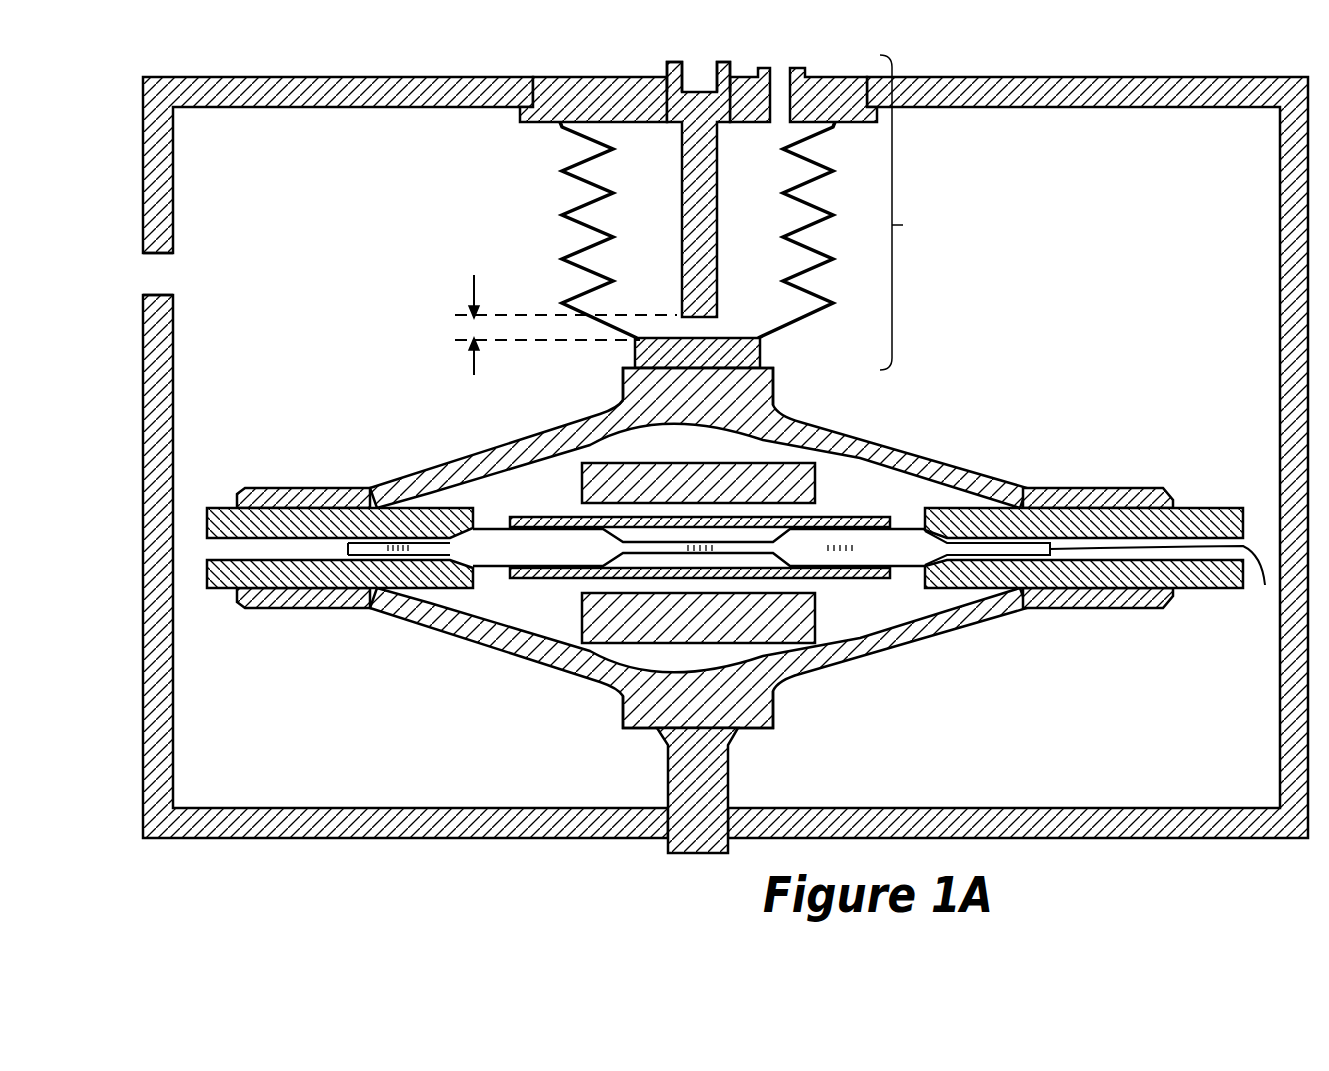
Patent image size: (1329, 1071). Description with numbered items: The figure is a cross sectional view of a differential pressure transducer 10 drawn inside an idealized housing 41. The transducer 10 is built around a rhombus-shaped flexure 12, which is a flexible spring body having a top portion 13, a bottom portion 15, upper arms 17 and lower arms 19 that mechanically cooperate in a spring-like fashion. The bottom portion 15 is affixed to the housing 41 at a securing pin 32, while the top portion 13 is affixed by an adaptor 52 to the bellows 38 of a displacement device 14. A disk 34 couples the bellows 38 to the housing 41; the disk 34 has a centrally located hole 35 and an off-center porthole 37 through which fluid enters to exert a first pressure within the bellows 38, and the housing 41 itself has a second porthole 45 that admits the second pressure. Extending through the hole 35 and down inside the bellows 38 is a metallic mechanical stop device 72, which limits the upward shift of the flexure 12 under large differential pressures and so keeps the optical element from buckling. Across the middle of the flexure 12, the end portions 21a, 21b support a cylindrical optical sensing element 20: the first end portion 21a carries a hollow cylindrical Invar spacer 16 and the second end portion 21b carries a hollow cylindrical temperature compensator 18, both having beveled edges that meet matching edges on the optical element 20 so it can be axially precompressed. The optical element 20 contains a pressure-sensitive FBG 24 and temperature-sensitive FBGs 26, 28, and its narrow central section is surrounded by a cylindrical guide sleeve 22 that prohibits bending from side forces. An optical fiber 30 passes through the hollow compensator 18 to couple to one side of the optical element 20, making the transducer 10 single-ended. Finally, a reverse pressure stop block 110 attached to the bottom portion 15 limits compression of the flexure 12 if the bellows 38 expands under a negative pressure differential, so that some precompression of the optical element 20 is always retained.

The differential pressure transducer 10 is at (703, 457).
The flexure 12 is at (685, 551).
The top portion 13 is at (770, 398).
The displacement device 14 is at (703, 218).
The bottom portion 15 is at (630, 720).
The spacer 16 is at (317, 580).
The upper arms 17 is at (698, 438).
The temperature compensator 18 is at (1055, 588).
The lower arms 19 is at (698, 686).
The optical sensing element 20 is at (566, 594).
The first end portion 21a is at (268, 488).
The second end portion 21b is at (1108, 488).
The guide sleeve 22 is at (745, 520).
The pressure-sensitive FBG 24 is at (698, 552).
The temperature-sensitive FBG 26 is at (845, 553).
The temperature-sensitive FBG 28 is at (398, 558).
The optical fiber 30 is at (1252, 560).
The securing pin 32 is at (715, 790).
The disk 34 is at (545, 122).
The hole 35 is at (713, 68).
The porthole 37 is at (790, 92).
The bellows 38 is at (572, 210).
The housing 41 is at (208, 820).
The second porthole 45 is at (156, 277).
The adaptor 52 is at (635, 350).
The mechanical stop device 72 is at (707, 158).
The reverse pressure stop block 110 is at (600, 482).